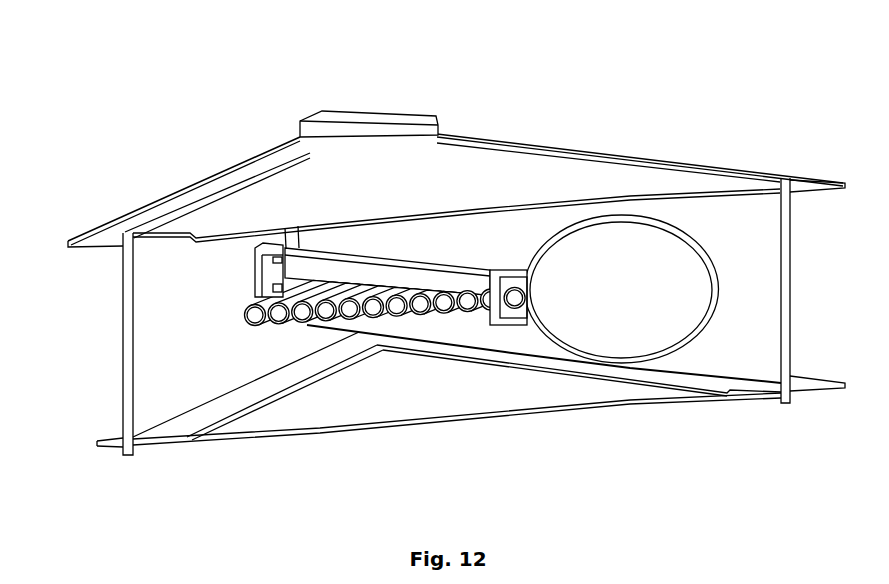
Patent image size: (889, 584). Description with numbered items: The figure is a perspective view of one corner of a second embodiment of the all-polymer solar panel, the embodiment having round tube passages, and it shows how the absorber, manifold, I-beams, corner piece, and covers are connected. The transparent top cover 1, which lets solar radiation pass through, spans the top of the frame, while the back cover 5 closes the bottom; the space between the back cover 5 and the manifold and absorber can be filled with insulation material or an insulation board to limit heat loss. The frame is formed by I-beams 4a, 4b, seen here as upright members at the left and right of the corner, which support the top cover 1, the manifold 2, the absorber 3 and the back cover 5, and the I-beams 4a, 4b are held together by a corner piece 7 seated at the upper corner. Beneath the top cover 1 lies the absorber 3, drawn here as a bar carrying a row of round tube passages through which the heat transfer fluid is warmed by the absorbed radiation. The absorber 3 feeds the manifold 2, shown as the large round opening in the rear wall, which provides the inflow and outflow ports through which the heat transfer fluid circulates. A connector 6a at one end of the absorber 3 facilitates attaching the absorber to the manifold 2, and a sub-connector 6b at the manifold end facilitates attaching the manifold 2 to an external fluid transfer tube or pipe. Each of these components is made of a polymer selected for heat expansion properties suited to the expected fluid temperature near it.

The top cover 1 is at (455, 191).
The manifold 2 is at (622, 289).
The absorber 3 is at (360, 272).
The I-beam 4a is at (125, 408).
The I-beam 4b is at (787, 260).
The back cover 5 is at (457, 392).
The connector 6a is at (255, 287).
The sub-connector 6b is at (516, 326).
The corner piece 7 is at (358, 118).